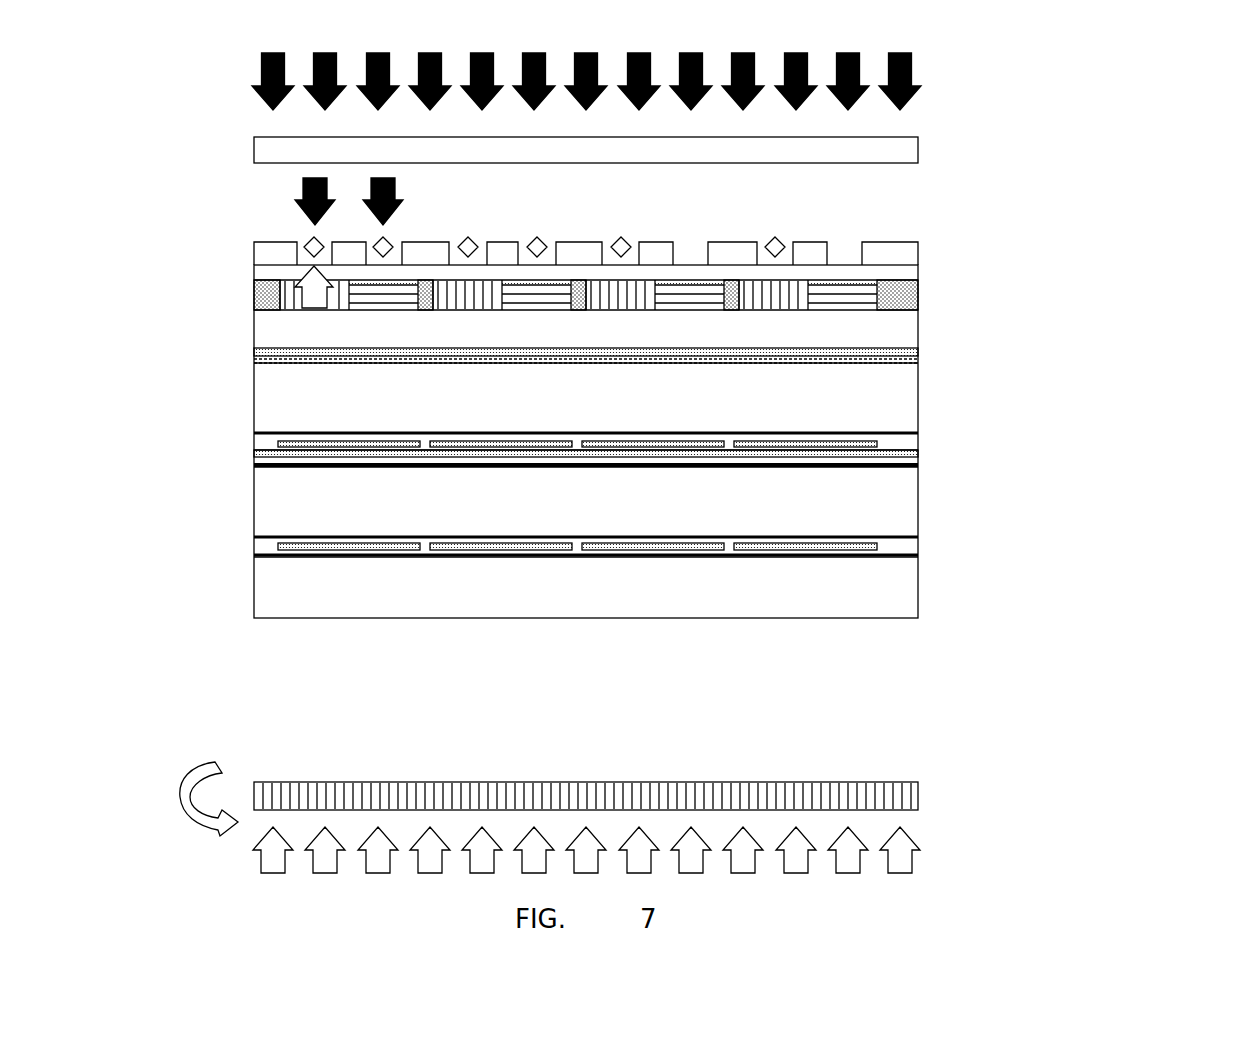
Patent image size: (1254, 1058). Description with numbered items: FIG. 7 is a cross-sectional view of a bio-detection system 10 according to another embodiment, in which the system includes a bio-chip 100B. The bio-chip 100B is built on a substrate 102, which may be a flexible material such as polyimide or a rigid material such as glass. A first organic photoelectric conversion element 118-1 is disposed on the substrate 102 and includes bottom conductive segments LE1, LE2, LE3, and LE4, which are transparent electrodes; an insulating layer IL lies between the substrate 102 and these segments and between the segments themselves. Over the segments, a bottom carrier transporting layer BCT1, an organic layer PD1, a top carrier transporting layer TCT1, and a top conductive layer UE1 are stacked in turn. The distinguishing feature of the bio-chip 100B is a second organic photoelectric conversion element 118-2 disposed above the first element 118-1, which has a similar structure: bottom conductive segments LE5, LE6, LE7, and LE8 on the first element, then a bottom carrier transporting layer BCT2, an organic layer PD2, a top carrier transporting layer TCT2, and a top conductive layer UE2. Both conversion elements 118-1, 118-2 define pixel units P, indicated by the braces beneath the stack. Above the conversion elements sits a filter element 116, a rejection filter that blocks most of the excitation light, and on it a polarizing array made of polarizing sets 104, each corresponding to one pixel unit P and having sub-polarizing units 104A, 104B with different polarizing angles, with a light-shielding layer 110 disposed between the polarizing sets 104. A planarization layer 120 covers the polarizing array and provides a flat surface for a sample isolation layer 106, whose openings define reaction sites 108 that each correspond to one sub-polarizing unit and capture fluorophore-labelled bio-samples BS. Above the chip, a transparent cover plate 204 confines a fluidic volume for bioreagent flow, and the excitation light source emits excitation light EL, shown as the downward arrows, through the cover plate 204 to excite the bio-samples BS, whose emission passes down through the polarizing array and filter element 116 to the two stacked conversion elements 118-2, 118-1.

The bio-detection system 10 is at (111, 44).
The bio-chip 100B is at (1058, 242).
The substrate 102 is at (268, 597).
The polarizing set 104 is at (1176, 56).
The sub-polarizing unit 104A is at (285, 296).
The sub-polarizing unit 104B is at (402, 297).
The sample isolation layer 106 is at (570, 255).
The reaction site 108 is at (843, 248).
The light-shielding layer 110 is at (576, 243).
The filter element 116 is at (905, 327).
The organic photoelectric conversion element 118-1 is at (988, 458).
The organic photoelectric conversion element 118-2 is at (988, 350).
The planarization layer 120 is at (905, 272).
The cover plate 204 is at (905, 151).
The excitation light EL is at (915, 64).
The bio-sample BS is at (780, 246).
The insulating layer IL is at (900, 443).
The top conductive layer UE1 is at (258, 454).
The top conductive layer UE2 is at (258, 352).
The top carrier transporting layer TCT1 is at (258, 466).
The top carrier transporting layer TCT2 is at (258, 360).
The organic layer PD1 is at (268, 508).
The organic layer PD2 is at (268, 397).
The bottom carrier transporting layer BCT1 is at (268, 540).
The bottom carrier transporting layer BCT2 is at (268, 437).
The bottom conductive segment LE1 is at (320, 552).
The bottom conductive segment LE2 is at (472, 552).
The bottom conductive segment LE3 is at (624, 552).
The bottom conductive segment LE4 is at (775, 552).
The bottom conductive segment LE5 is at (395, 447).
The bottom conductive segment LE6 is at (545, 447).
The bottom conductive segment LE7 is at (697, 447).
The bottom conductive segment LE8 is at (849, 447).
The pixel unit P is at (420, 695).